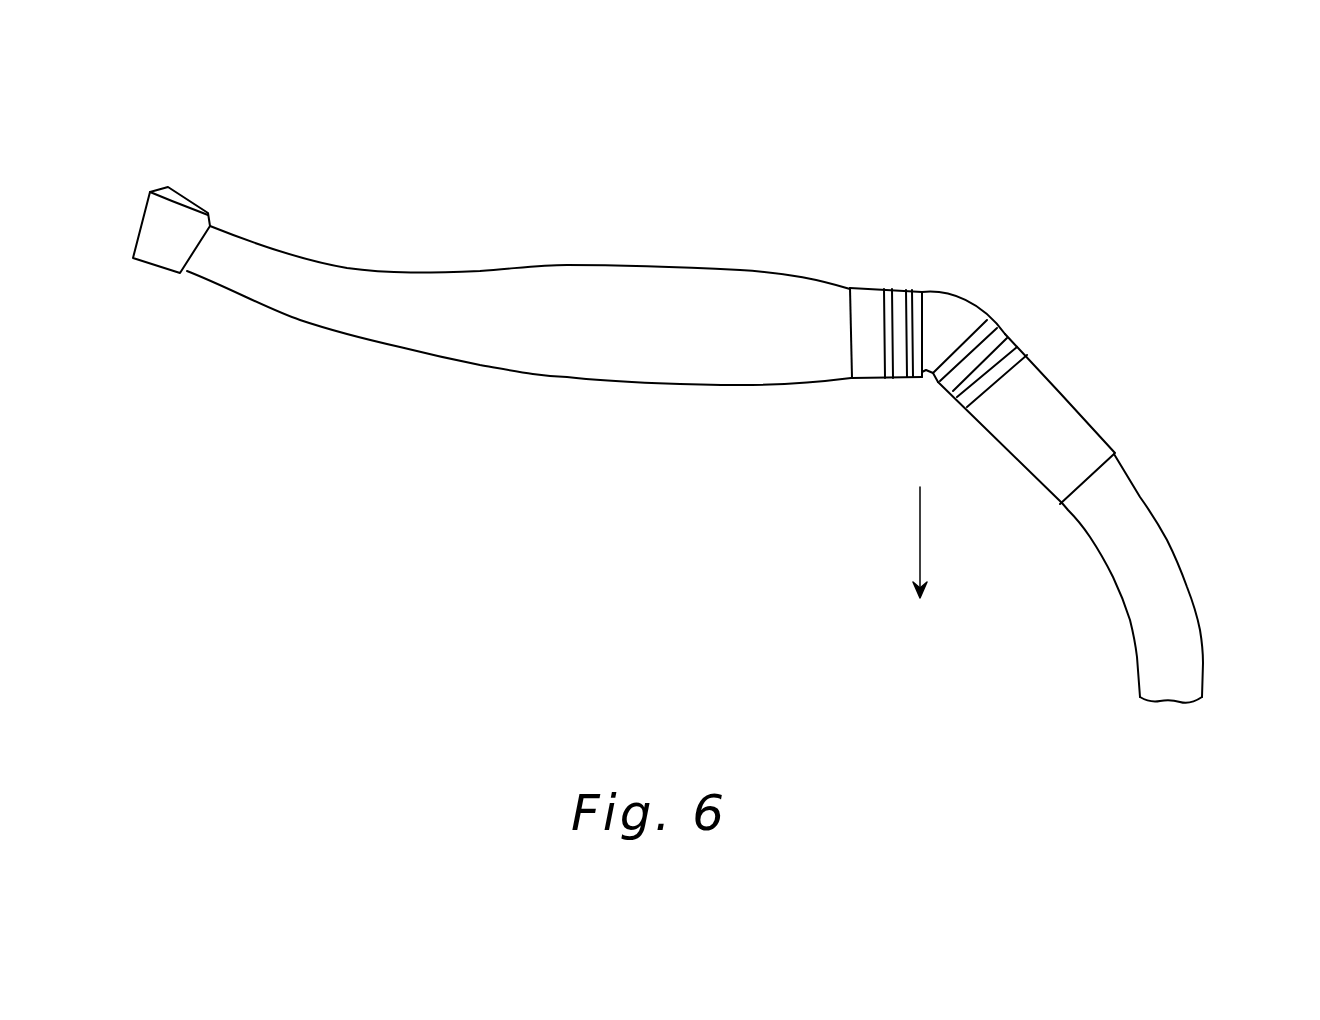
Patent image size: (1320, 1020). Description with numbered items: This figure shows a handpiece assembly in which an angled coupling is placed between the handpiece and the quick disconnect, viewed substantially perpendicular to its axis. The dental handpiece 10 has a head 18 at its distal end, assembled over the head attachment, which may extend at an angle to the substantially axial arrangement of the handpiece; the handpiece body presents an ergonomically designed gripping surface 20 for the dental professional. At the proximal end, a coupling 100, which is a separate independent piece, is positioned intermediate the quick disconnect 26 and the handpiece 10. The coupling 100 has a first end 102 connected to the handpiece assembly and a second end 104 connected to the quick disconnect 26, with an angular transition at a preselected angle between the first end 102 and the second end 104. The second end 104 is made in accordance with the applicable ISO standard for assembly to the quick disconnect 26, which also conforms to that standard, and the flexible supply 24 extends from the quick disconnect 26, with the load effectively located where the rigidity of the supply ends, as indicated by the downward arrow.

The dental handpiece 10 is at (622, 234).
The head 18 is at (162, 188).
The gripping surface 20 is at (422, 288).
The flexible supply 24 is at (1202, 647).
The quick disconnect 26 is at (1090, 420).
The coupling 100 is at (958, 297).
The first end of coupling 102 is at (849, 370).
The second end of coupling 104 is at (915, 382).